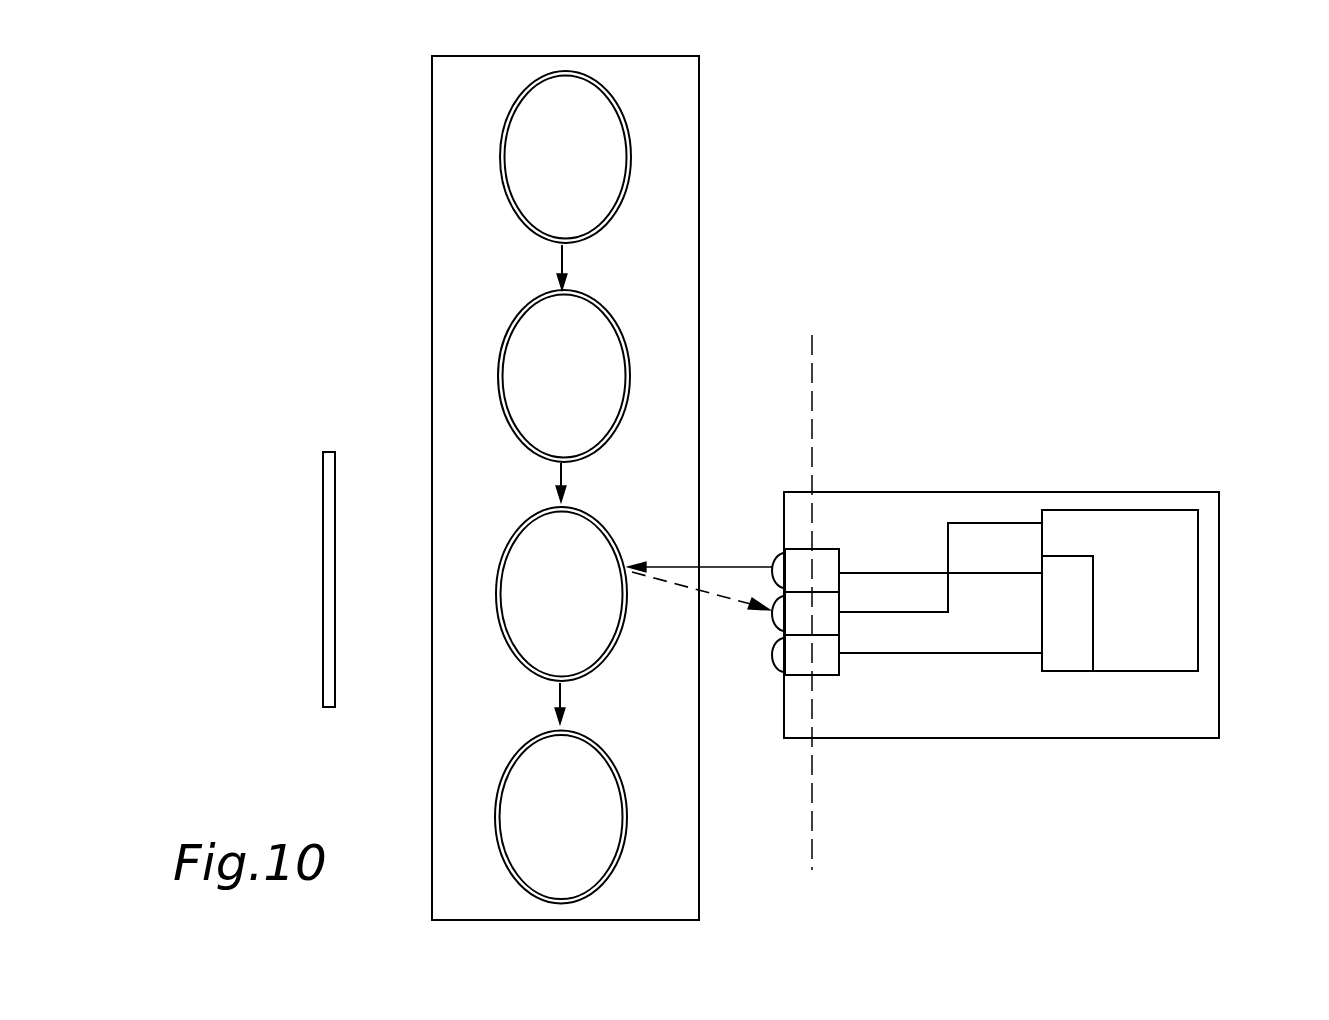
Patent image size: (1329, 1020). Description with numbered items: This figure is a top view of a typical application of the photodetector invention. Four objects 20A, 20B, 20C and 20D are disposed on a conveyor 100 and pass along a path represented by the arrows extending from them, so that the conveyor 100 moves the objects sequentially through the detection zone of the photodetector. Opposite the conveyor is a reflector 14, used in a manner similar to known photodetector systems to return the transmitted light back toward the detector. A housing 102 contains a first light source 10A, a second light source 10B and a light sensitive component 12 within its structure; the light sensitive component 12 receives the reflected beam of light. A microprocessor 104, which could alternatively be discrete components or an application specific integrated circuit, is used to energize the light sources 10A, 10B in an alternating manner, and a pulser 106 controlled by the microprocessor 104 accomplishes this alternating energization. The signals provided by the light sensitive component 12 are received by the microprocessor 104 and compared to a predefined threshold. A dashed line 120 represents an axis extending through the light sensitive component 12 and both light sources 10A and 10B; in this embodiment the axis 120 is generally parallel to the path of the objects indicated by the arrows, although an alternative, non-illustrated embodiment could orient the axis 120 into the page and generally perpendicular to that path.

The conveyor 100 is at (680, 250).
The object 20A is at (500, 778).
The object 20B is at (506, 542).
The object 20C is at (500, 358).
The object 20D is at (499, 148).
The reflector 14 is at (323, 458).
The axis 120 is at (813, 365).
The housing 102 is at (1212, 700).
The light sensitive component 12 is at (843, 619).
The first light source 10A is at (822, 558).
The second light source 10B is at (828, 670).
The microprocessor 104 is at (1127, 517).
The pulser 106 is at (1073, 662).